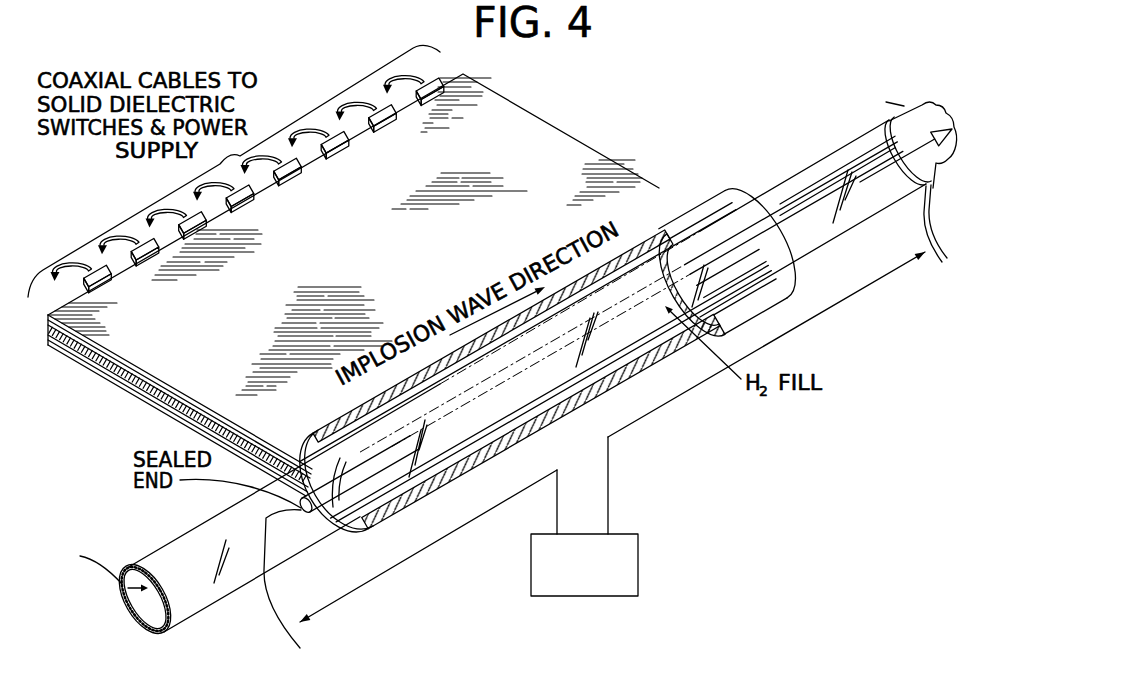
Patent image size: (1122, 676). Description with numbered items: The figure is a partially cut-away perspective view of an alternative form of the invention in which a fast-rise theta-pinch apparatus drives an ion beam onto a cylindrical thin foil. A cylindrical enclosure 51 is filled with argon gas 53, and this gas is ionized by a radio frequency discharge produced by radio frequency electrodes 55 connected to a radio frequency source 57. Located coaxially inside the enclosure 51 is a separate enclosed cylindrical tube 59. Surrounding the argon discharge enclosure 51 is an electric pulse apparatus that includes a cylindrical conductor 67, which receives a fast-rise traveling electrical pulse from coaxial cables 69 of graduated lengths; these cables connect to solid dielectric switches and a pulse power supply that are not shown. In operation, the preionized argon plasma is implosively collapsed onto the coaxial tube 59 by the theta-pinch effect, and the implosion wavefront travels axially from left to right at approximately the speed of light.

The cylindrical enclosure 51 is at (209, 606).
The argon gas 53 is at (152, 613).
The radio frequency electrodes 55 is at (283, 608).
The radio frequency source 57 is at (641, 557).
The enclosed cylindrical tube 59 is at (800, 204).
The cylindrical conductor 67 is at (718, 210).
The coaxial cables 69 is at (370, 106).